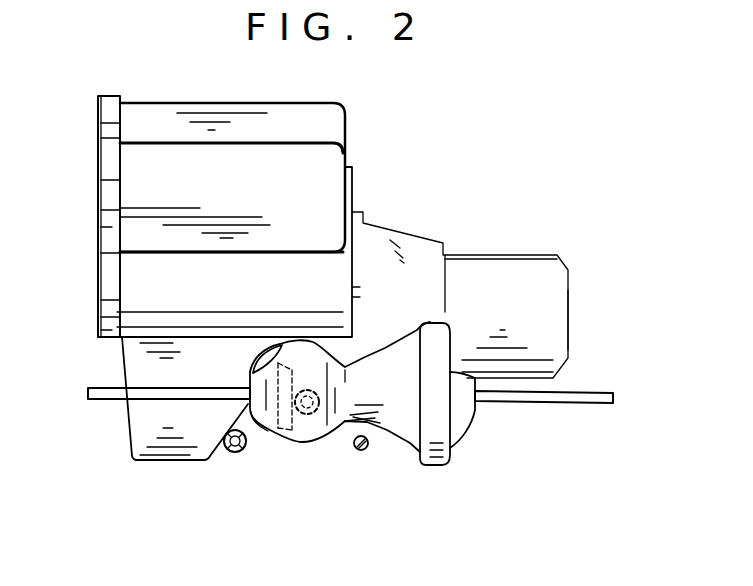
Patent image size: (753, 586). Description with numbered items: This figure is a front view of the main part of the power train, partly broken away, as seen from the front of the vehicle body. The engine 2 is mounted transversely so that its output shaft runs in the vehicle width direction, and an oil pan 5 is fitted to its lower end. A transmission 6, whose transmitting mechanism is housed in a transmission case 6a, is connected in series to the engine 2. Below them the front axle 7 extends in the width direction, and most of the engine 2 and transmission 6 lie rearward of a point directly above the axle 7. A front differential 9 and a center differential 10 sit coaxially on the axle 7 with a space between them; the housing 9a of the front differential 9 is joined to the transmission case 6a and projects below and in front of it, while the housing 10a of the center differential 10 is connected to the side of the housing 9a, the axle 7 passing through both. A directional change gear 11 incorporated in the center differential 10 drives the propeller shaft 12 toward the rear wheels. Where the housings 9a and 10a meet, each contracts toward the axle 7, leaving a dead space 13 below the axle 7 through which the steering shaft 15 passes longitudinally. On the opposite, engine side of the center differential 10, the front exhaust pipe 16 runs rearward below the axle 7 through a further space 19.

The engine 2 is at (346, 152).
The oil pan 5 is at (128, 435).
The transmission 6 is at (528, 253).
The transmission case 6a is at (568, 322).
The front axle 7 is at (97, 400).
The front differential 9 is at (462, 444).
The housing of front differential 9a is at (437, 467).
The center differential 10 is at (302, 449).
The housing of center differential 10a is at (280, 443).
The directional change gear 11 is at (250, 371).
The propeller shaft 12 is at (321, 438).
The space 13 is at (375, 436).
The steering shaft 15 is at (362, 451).
The front exhaust pipe 16 is at (232, 452).
The space 19 is at (257, 423).